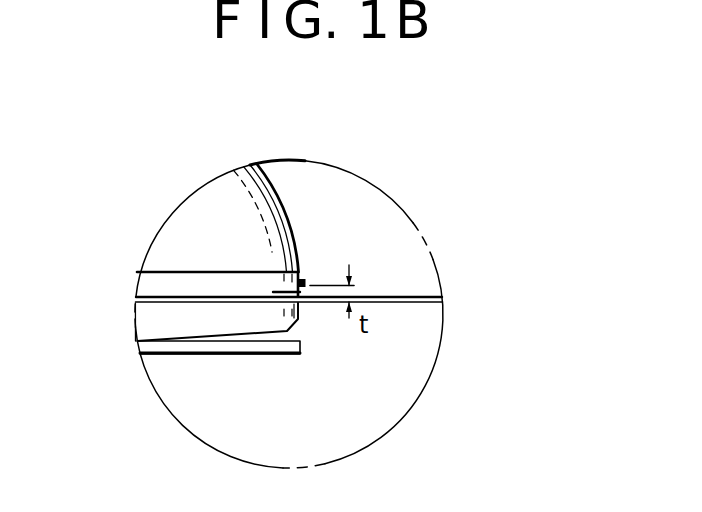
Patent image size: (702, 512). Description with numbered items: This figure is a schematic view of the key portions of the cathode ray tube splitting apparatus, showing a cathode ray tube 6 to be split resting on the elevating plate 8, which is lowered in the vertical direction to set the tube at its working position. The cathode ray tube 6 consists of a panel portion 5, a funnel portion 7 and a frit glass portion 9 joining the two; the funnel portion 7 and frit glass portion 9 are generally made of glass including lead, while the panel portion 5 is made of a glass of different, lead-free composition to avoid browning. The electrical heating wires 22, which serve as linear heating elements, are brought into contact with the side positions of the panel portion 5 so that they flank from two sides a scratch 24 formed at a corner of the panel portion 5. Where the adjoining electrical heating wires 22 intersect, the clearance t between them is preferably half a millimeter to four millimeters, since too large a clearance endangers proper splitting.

The panel portion 5 is at (175, 285).
The cathode ray tube 6 is at (286, 180).
The funnel portion 7 is at (243, 196).
The elevating plate 8 is at (198, 345).
The frit glass portion 9 is at (247, 268).
The electrical heating wire 22 is at (303, 280).
The scratch 24 is at (280, 303).